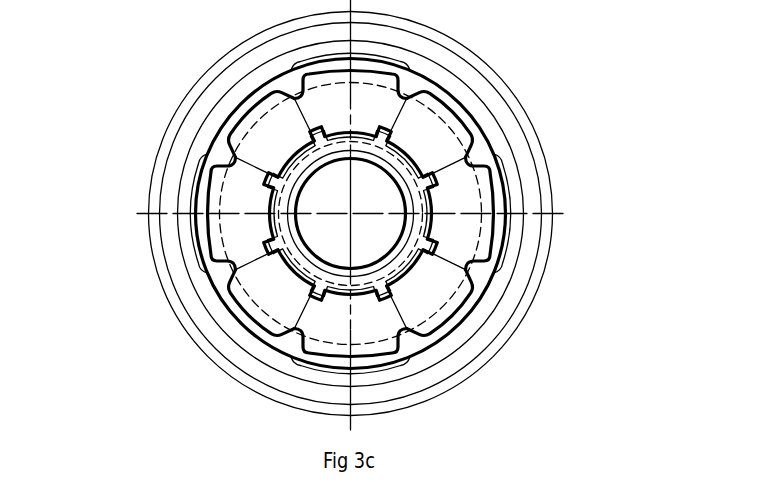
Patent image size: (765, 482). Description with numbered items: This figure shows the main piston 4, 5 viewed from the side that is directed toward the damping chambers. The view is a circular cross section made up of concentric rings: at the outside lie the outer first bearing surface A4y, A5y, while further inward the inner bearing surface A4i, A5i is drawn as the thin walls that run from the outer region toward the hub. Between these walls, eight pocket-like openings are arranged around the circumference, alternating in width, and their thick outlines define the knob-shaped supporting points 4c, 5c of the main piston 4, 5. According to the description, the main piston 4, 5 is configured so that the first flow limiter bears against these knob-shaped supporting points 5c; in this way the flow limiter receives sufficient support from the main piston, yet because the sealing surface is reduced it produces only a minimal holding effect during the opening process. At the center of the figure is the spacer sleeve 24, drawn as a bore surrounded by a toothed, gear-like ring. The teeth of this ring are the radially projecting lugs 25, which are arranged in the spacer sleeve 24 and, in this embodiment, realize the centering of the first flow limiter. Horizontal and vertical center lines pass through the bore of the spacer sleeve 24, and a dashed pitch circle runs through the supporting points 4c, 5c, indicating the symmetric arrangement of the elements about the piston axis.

The main piston 4 is at (173, 85).
The main piston 5 is at (351, 214).
The knob-shaped supporting points 4c is at (430, 173).
The knob-shaped supporting points 5c is at (351, 214).
The spacer sleeve 24 is at (297, 202).
The radially projecting lugs 25 is at (270, 173).
The inner bearing surface A4i is at (265, 256).
The inner bearing surface A5i is at (351, 214).
The outer first bearing surface A4y is at (462, 315).
The outer first bearing surface A5y is at (350, 213).